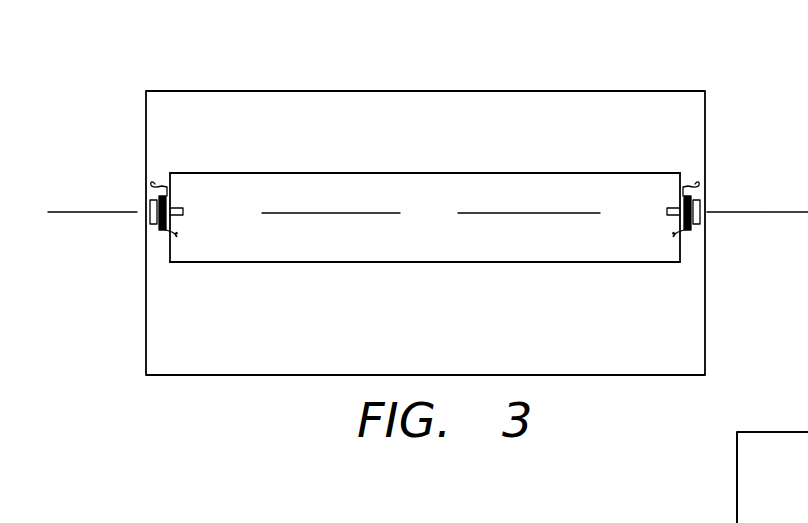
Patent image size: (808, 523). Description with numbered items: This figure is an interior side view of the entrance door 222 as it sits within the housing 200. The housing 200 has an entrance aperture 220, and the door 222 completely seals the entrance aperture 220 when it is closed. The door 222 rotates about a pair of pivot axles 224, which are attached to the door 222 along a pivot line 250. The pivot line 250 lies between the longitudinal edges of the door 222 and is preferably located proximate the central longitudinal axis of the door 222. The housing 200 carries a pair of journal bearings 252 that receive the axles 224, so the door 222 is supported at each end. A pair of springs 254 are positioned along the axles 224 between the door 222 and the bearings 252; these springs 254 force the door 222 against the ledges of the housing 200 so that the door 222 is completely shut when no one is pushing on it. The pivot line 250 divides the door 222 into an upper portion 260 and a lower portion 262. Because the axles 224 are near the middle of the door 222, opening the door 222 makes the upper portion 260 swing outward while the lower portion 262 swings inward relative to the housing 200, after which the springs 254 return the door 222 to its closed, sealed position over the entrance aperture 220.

The housing 200 is at (508, 120).
The entrance aperture 220 is at (265, 171).
The entrance door 222 is at (431, 215).
The pivot axles 224 is at (183, 212).
The pivot line 250 is at (102, 210).
The journal bearings 252 is at (150, 202).
The springs 254 is at (166, 231).
The upper portion 260 is at (315, 182).
The lower portion 262 is at (347, 240).